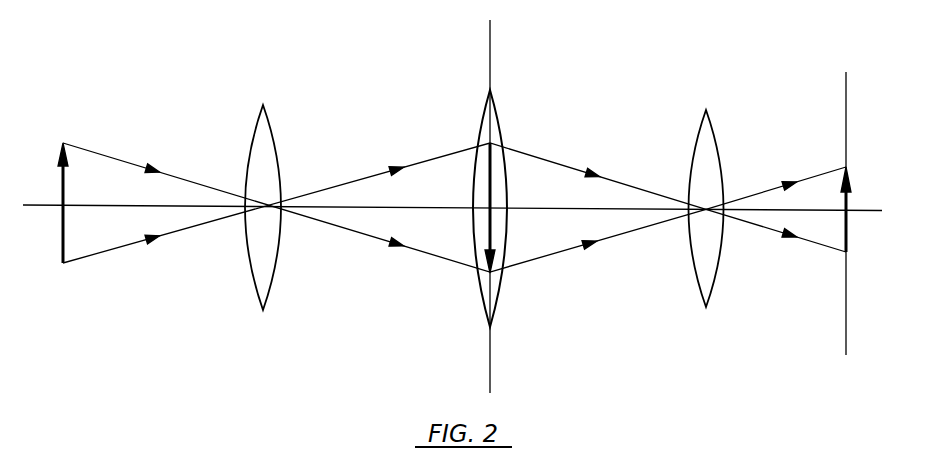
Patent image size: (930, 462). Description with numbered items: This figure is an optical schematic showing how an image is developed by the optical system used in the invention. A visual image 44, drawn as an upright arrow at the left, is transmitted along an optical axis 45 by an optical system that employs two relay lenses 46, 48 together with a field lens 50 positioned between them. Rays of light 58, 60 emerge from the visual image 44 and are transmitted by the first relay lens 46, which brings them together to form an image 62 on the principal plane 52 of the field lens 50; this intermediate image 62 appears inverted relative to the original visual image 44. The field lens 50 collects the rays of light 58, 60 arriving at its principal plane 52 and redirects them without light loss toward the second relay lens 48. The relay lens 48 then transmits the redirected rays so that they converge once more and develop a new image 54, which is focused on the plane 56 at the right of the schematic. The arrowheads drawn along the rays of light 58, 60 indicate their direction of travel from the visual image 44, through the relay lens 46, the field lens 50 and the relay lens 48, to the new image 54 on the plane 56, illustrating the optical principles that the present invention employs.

The visual image 44 is at (57, 233).
The optical axis 45 is at (33, 203).
The relay lens 46 is at (277, 287).
The relay lens 48 is at (702, 293).
The field lens 50 is at (497, 297).
The principal plane 52 is at (492, 73).
The new image 54 is at (845, 221).
The plane 56 is at (843, 317).
The ray of light 58 is at (133, 158).
The ray of light 60 is at (187, 230).
The image 62 is at (488, 222).